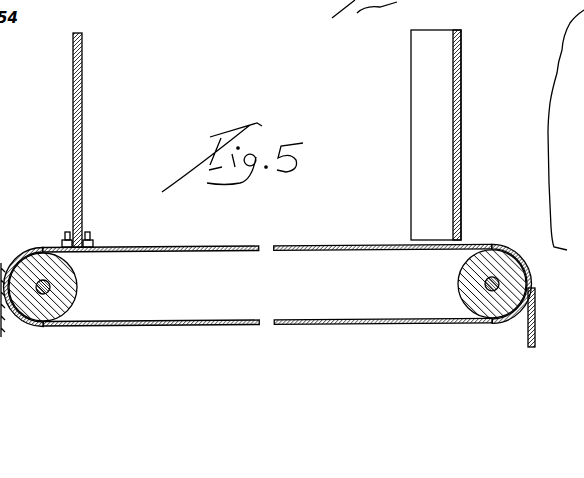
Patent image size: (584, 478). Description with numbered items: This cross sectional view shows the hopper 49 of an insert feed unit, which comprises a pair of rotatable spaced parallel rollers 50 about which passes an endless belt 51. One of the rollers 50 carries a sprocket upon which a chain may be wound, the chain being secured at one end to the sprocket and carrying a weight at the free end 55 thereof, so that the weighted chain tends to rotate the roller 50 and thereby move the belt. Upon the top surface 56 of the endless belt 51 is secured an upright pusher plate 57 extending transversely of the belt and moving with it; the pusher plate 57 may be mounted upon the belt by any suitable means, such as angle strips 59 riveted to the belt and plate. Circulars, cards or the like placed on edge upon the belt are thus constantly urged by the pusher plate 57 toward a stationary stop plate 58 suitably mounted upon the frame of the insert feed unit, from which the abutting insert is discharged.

The hopper 49 is at (430, 195).
The rollers 50 is at (32, 266).
The endless belt 51 is at (203, 250).
The free end 55 is at (537, 305).
The top surface 56 is at (126, 247).
The pusher plate 57 is at (84, 128).
The stop plate 58 is at (424, 107).
The angle strips 59 is at (68, 241).